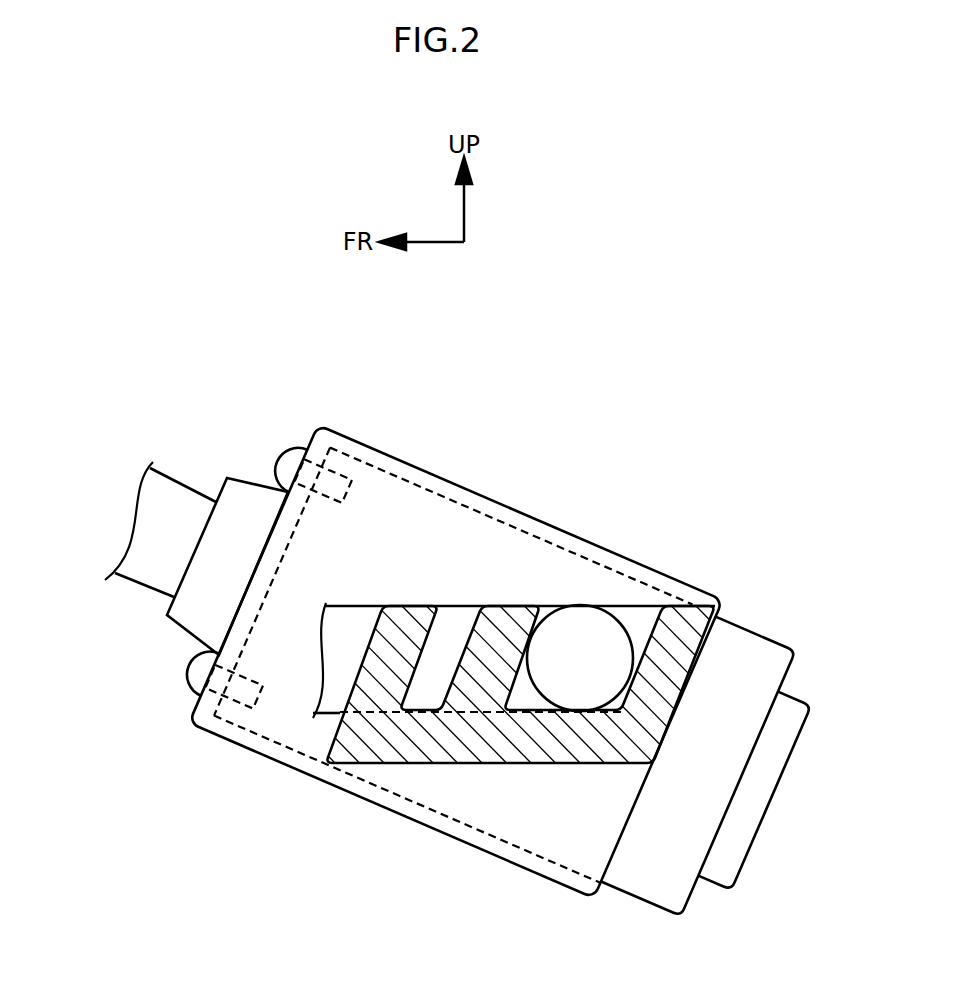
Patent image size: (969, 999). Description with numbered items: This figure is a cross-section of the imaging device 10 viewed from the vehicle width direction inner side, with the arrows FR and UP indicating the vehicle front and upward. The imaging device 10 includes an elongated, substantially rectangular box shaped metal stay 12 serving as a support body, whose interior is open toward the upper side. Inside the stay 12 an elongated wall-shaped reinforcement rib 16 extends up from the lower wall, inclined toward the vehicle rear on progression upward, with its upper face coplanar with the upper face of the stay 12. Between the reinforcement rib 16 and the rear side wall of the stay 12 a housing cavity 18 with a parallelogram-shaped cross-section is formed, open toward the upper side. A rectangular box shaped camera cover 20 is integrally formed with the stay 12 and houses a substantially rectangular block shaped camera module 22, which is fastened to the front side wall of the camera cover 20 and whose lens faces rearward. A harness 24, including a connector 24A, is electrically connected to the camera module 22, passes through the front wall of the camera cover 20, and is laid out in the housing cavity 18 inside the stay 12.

The imaging device 10 is at (597, 372).
The stay 12 is at (415, 763).
The reinforcement rib 16 is at (510, 604).
The housing cavity 18 is at (638, 618).
The camera cover 20 is at (478, 495).
The camera module 22 is at (765, 637).
The harness 24 is at (180, 480).
The connector 24A is at (247, 479).